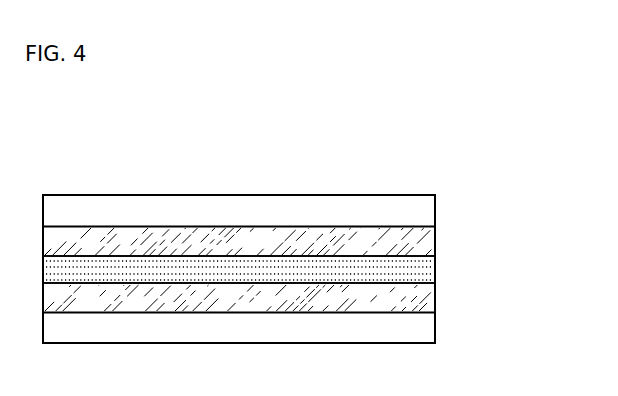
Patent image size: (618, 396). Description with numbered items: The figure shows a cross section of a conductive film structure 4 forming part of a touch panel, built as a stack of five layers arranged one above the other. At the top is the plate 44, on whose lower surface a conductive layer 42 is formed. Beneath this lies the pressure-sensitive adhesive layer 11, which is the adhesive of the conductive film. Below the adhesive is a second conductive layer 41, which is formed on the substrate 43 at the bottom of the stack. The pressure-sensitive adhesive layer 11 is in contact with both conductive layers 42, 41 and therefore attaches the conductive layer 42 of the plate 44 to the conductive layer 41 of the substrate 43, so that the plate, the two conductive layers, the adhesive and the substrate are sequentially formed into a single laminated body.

The conductive film 4 is at (309, 186).
The plate 44 is at (430, 210).
The conductive layer 42 is at (432, 240).
The pressure-sensitive adhesive layer 11 is at (432, 271).
The conductive layer 41 is at (432, 299).
The substrate 43 is at (432, 331).